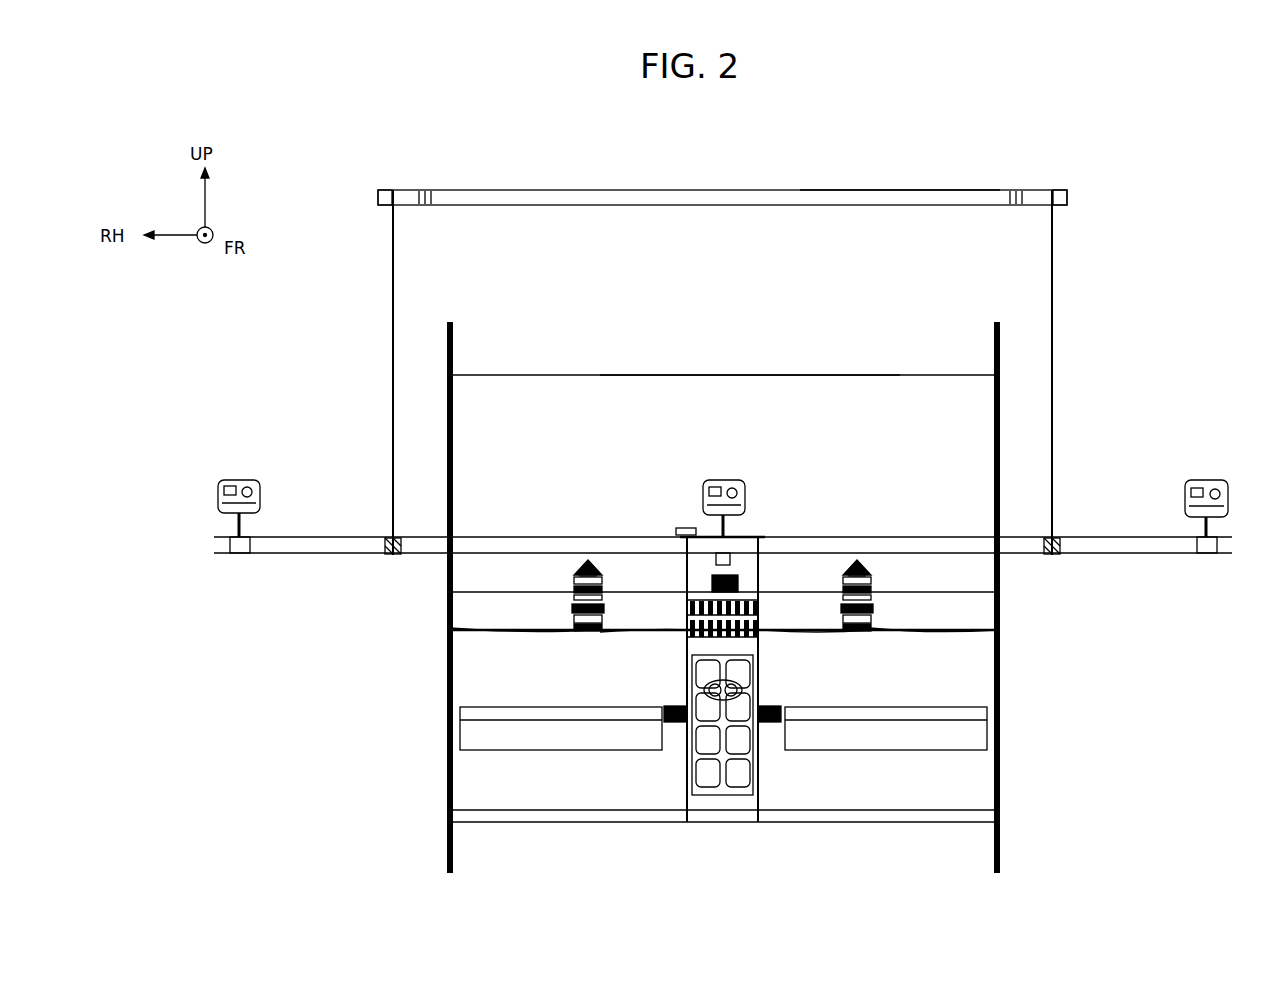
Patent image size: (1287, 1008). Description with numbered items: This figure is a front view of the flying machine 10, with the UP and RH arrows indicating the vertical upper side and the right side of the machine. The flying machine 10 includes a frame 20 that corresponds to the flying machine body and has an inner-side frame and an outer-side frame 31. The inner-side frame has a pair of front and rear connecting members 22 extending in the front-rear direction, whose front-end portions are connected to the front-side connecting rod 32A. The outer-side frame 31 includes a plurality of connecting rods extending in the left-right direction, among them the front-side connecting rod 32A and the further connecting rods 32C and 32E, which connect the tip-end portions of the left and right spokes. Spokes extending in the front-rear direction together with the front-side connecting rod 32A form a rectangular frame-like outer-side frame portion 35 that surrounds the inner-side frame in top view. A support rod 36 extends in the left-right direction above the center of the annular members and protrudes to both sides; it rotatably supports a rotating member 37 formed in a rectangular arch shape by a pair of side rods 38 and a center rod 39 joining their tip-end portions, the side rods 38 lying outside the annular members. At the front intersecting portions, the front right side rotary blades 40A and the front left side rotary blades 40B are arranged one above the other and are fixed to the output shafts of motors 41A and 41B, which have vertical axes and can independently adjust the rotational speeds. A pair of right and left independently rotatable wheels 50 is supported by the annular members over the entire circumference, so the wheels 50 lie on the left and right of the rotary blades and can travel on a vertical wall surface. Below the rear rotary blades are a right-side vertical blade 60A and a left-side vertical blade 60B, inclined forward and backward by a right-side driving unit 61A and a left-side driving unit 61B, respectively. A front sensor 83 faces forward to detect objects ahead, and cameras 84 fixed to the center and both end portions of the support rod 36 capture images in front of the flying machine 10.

The flying machine 10 is at (836, 152).
The frame 20 is at (758, 374).
The front and rear connecting members 22 is at (608, 594).
The outer-side frame 31 is at (624, 822).
The front-side connecting rod 32A is at (492, 592).
The connecting rod 32C is at (567, 374).
The connecting rod 32E is at (527, 810).
The outer-side frame portion 35 is at (453, 612).
The support rod 36 is at (634, 537).
The rotating member 37 is at (696, 189).
The side rods 38 is at (392, 322).
The center rod 39 is at (903, 188).
The front right side rotary blades 40A is at (584, 558).
The front left side rotary blades 40B is at (862, 560).
The motor 41A is at (576, 582).
The motor 41B is at (865, 578).
The wheels 50 is at (448, 321).
The right-side vertical blade 60A is at (574, 750).
The left-side vertical blade 60B is at (886, 750).
The right-side driving unit 61A is at (670, 693).
The left-side driving unit 61B is at (805, 665).
The front sensor 83 is at (706, 722).
The cameras 84 is at (242, 479).